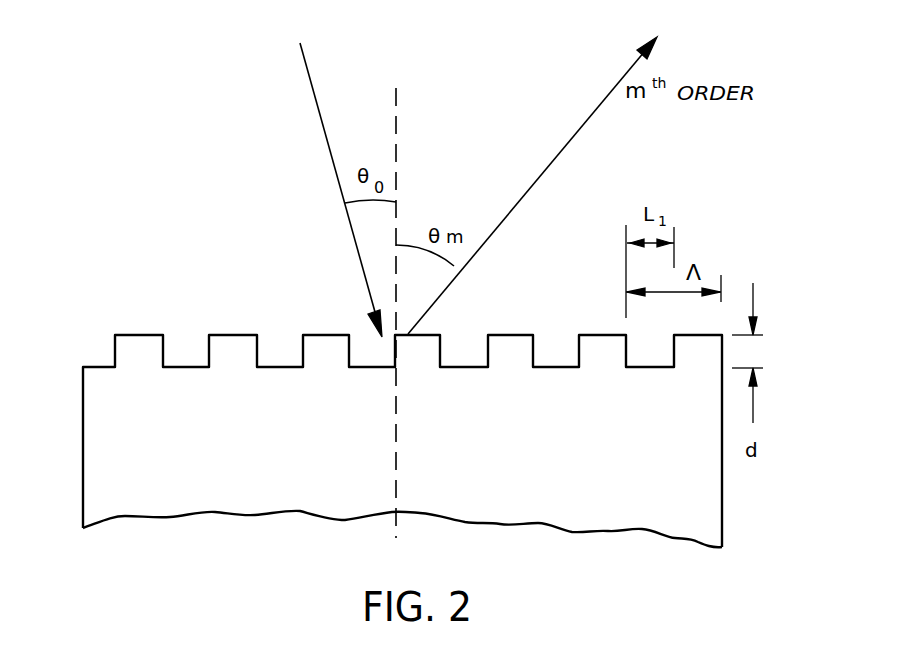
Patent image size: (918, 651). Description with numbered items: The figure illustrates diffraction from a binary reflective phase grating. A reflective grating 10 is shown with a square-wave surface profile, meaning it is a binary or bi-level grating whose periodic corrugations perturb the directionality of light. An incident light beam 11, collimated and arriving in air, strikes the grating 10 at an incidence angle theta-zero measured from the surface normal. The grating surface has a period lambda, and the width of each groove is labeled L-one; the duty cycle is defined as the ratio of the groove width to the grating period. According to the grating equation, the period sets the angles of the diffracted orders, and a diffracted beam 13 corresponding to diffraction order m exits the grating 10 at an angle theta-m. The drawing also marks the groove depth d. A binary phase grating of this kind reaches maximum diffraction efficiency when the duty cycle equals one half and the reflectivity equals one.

The reflective grating 10 is at (104, 378).
The incident light beam 11 is at (323, 128).
The diffracted beam 13 is at (563, 146).